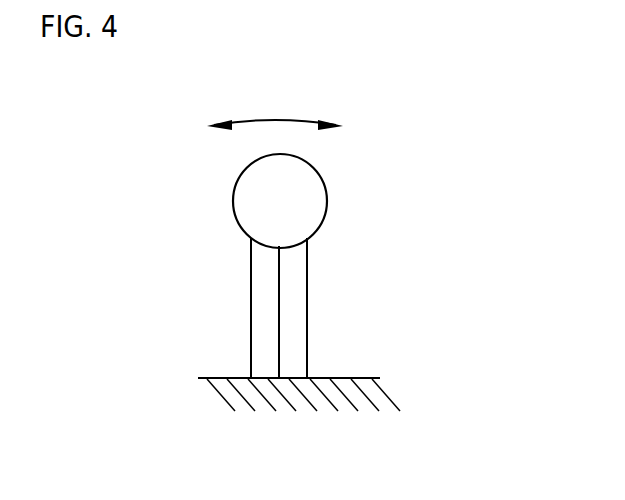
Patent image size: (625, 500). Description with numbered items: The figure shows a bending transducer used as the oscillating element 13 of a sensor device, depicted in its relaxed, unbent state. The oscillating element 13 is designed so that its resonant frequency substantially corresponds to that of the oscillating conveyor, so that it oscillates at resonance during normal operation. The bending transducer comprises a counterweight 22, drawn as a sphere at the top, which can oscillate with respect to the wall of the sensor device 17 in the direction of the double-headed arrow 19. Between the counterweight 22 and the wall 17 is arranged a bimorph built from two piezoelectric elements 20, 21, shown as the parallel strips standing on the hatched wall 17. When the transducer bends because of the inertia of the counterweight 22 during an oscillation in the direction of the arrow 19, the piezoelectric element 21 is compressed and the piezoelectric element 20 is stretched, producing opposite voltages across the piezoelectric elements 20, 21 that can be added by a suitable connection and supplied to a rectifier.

The oscillating element 13 is at (396, 146).
The wall of the sensor device 17 is at (273, 395).
The arrow 19 is at (273, 118).
The piezoelectric element 20 is at (253, 283).
The piezoelectric element 21 is at (302, 276).
The counterweight 22 is at (240, 207).